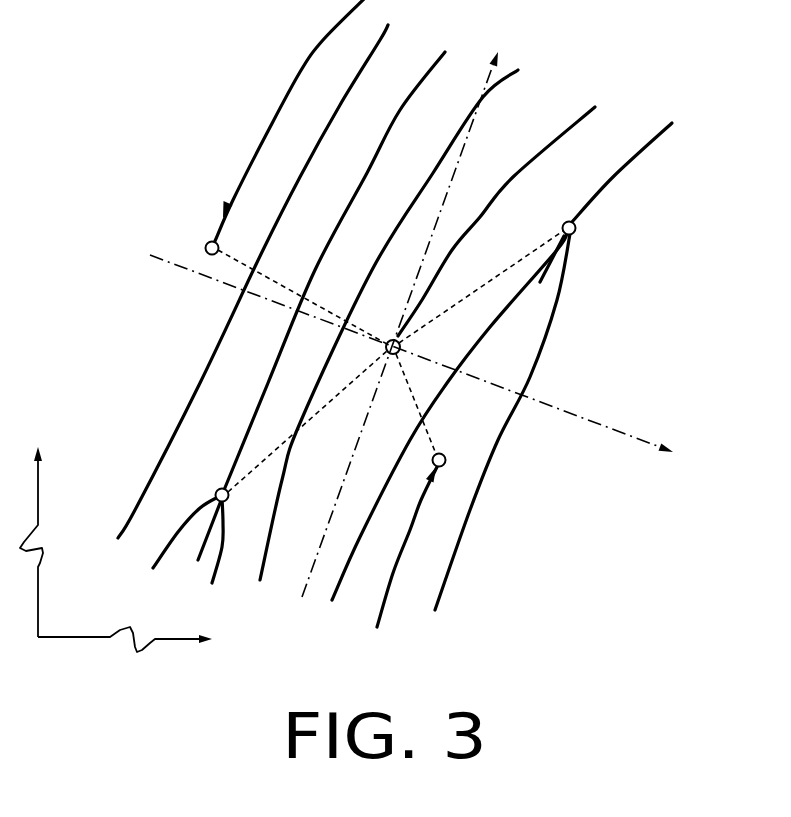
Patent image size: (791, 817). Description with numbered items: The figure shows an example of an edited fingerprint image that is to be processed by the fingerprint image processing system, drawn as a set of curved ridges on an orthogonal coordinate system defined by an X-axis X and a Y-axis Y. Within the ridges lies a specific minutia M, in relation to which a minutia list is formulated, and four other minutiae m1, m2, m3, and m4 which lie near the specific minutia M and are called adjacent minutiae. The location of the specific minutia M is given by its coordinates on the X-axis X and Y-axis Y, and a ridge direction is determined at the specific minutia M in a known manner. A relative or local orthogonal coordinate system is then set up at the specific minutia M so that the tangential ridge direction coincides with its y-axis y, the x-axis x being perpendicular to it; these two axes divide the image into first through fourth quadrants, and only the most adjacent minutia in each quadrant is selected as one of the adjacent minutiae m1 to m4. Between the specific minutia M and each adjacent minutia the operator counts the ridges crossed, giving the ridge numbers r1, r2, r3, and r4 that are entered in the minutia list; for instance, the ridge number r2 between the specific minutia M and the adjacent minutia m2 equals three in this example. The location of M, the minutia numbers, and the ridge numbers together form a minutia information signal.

The adjacent minutia m1 is at (502, 366).
The adjacent minutia m2 is at (266, 128).
The adjacent minutia m3 is at (425, 541).
The adjacent minutia m4 is at (299, 317).
The specific minutia M is at (490, 231).
The ridge number r1 is at (481, 287).
The ridge number r2 is at (302, 297).
The ridge number r3 is at (428, 404).
The ridge number r4 is at (308, 421).
The x-axis of relative orthogonal coordinate system x is at (423, 363).
The y-axis of relative orthogonal coordinate system y is at (405, 306).
The X-axis X is at (140, 639).
The Y-axis Y is at (35, 520).